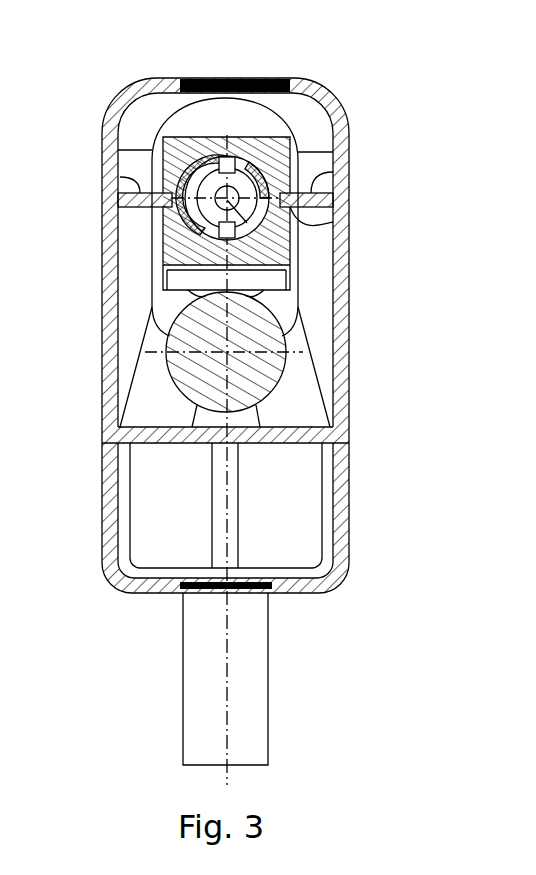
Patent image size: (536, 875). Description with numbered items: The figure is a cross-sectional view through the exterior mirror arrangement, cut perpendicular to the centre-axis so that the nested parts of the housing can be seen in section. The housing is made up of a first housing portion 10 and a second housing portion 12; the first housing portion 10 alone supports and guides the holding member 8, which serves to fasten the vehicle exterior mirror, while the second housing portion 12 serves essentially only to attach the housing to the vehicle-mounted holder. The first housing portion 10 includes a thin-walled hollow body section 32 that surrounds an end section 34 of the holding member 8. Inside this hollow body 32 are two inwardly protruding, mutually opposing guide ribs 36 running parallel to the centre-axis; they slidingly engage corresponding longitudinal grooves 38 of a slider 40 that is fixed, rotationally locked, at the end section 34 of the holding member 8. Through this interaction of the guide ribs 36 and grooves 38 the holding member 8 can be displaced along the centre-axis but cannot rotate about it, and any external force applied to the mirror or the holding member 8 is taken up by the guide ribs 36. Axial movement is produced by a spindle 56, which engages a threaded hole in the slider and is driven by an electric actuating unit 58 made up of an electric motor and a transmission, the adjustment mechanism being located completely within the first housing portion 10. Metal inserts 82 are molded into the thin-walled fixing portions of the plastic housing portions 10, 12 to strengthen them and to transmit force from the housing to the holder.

The holding member 8 is at (285, 690).
The first housing portion 10 is at (363, 378).
The second housing portion 12 is at (363, 487).
The thin-walled hollow body section 32 is at (193, 115).
The end section 34 is at (248, 183).
The guide ribs 36 is at (120, 177).
The longitudinal grooves 38 is at (163, 213).
The slider 40 is at (178, 243).
The spindle 56 is at (250, 228).
The electric actuating unit 58 is at (272, 373).
The metal inserts 82 is at (290, 80).